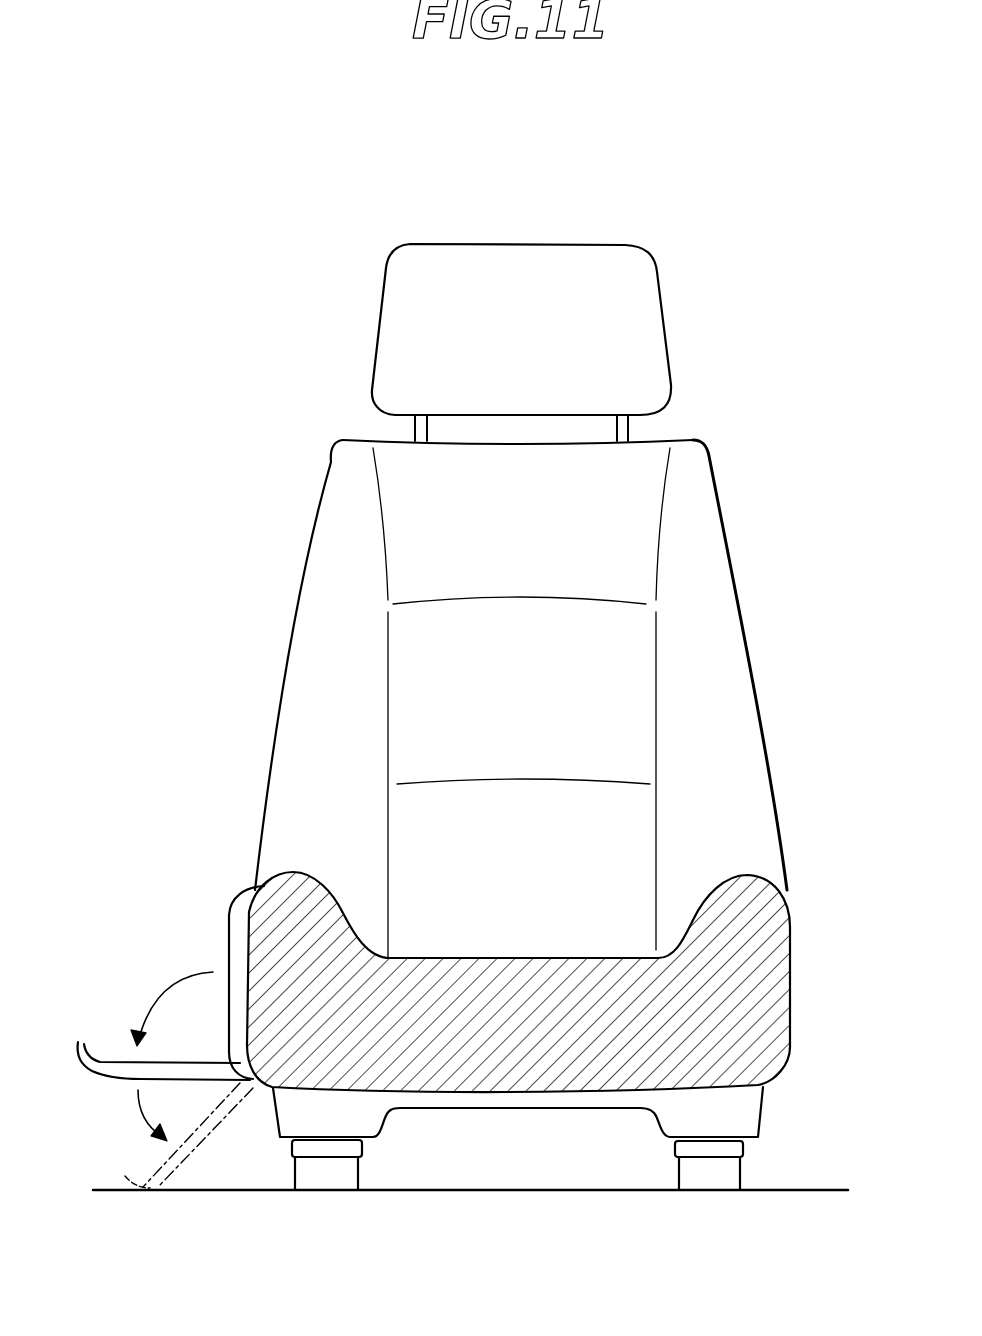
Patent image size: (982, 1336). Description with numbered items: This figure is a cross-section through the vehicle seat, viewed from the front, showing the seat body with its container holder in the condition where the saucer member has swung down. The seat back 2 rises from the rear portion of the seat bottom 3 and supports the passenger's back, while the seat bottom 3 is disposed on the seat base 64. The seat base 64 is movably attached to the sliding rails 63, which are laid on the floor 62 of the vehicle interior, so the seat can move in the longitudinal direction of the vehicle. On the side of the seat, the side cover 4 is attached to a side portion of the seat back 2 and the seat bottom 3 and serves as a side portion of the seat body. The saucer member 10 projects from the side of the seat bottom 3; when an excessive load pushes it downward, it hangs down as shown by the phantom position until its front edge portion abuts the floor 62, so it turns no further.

The seat back 2 is at (756, 742).
The seat bottom 3 is at (773, 998).
The side cover 4 is at (228, 937).
The saucer member 10 is at (105, 1083).
The floor 62 is at (242, 1191).
The sliding rails 63 is at (723, 1168).
The seat base 64 is at (752, 1112).